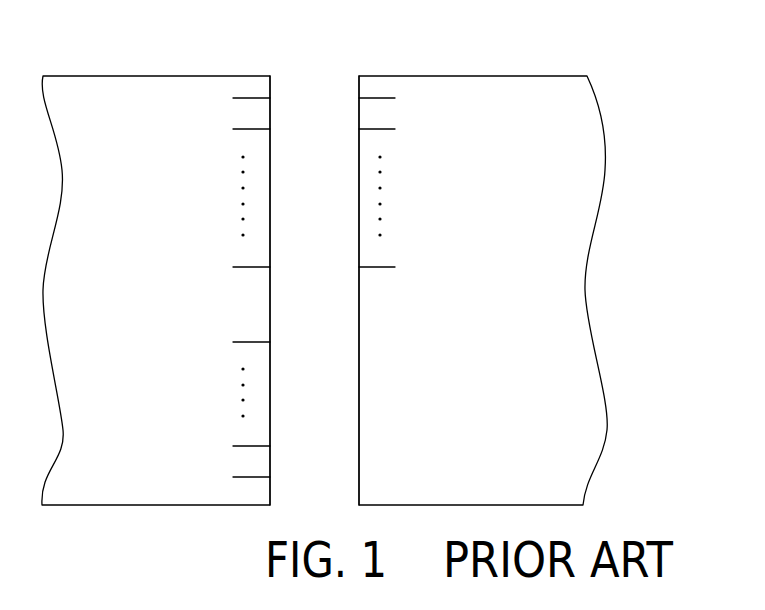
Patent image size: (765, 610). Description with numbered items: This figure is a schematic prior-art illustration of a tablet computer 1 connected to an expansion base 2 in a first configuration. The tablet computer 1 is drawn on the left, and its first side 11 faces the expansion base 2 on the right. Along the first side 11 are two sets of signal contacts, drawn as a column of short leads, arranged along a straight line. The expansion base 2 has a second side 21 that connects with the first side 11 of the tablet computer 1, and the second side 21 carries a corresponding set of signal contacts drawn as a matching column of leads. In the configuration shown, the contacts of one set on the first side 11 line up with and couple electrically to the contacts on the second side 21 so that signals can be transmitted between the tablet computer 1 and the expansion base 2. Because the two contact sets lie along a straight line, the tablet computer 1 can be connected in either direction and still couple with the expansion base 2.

The tablet computer 1 is at (196, 76).
The first side 11 is at (270, 98).
The expansion base 2 is at (433, 76).
The second side 21 is at (358, 97).